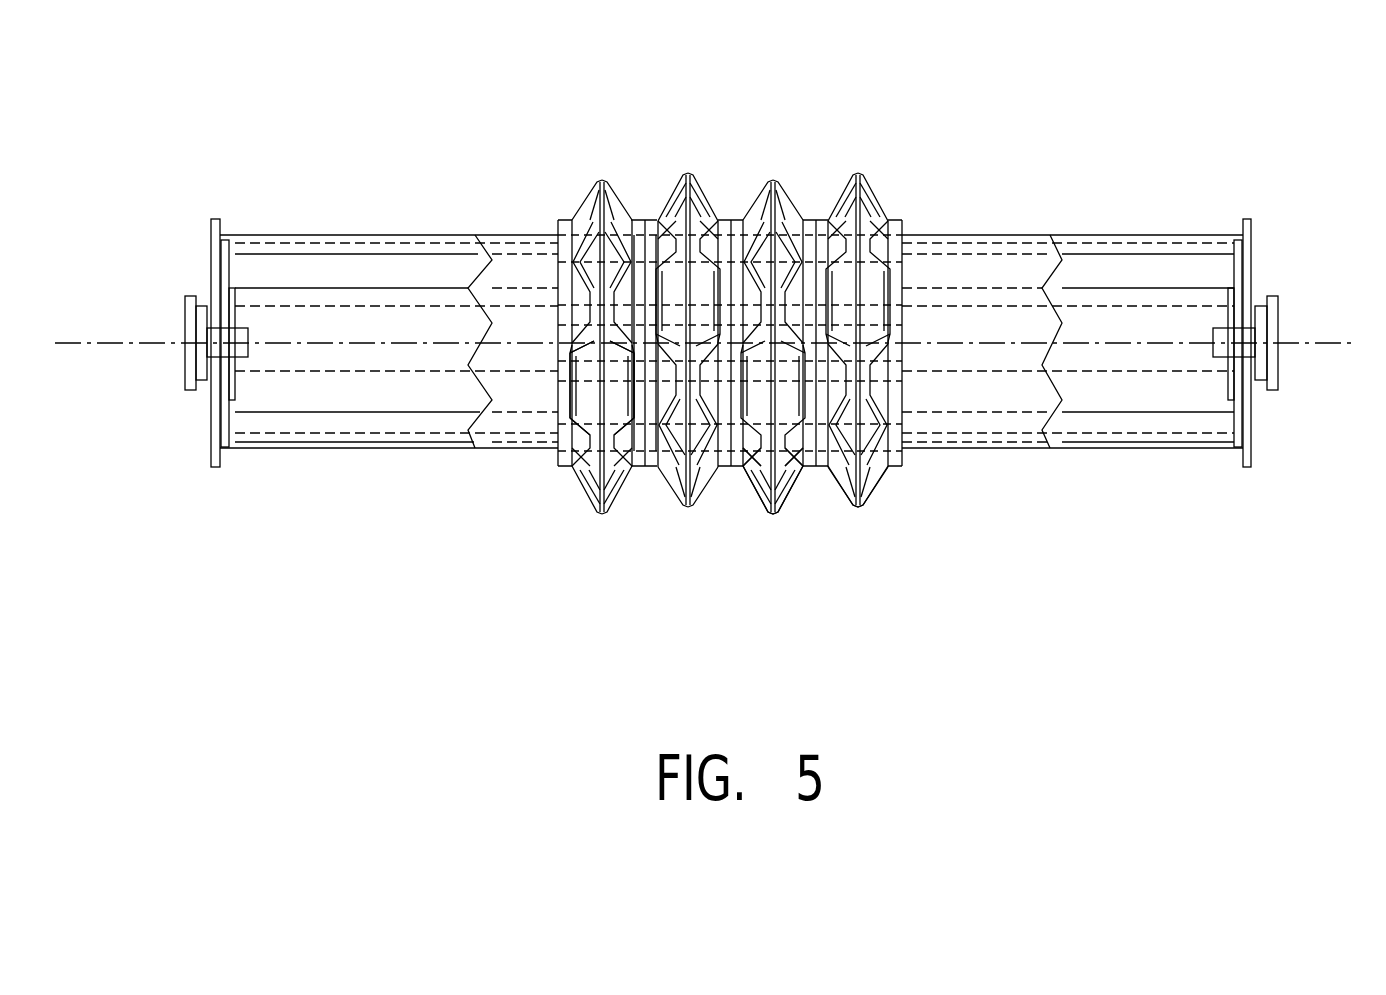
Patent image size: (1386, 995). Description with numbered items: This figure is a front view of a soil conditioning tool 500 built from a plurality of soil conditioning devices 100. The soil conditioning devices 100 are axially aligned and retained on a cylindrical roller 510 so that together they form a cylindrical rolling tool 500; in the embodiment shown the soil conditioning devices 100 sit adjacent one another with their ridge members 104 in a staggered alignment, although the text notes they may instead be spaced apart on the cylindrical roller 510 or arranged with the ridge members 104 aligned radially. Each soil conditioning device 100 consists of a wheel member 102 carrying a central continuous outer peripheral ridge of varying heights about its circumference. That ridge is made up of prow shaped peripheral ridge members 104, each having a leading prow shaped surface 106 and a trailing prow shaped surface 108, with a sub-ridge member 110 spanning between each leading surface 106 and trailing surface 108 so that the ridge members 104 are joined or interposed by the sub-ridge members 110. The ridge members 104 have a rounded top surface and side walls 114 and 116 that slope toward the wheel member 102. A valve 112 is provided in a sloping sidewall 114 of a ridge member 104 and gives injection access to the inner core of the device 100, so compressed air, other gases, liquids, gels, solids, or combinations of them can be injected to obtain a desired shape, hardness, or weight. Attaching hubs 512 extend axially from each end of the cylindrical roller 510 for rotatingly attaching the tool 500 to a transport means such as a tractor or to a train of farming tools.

The soil conditioning device 100 is at (770, 319).
The wheel member 102 is at (652, 232).
The peripheral ridge member 104 is at (772, 183).
The leading prow shaped surface 106 is at (782, 428).
The trailing prow shaped surface 108 is at (757, 477).
The sub-ridge member 110 is at (858, 237).
The valve 112 is at (582, 392).
The side wall 114 is at (873, 462).
The side wall 116 is at (588, 215).
The soil conditioning tool 500 is at (1200, 185).
The cylindrical roller 510 is at (512, 253).
The attaching hub 512 is at (186, 338).